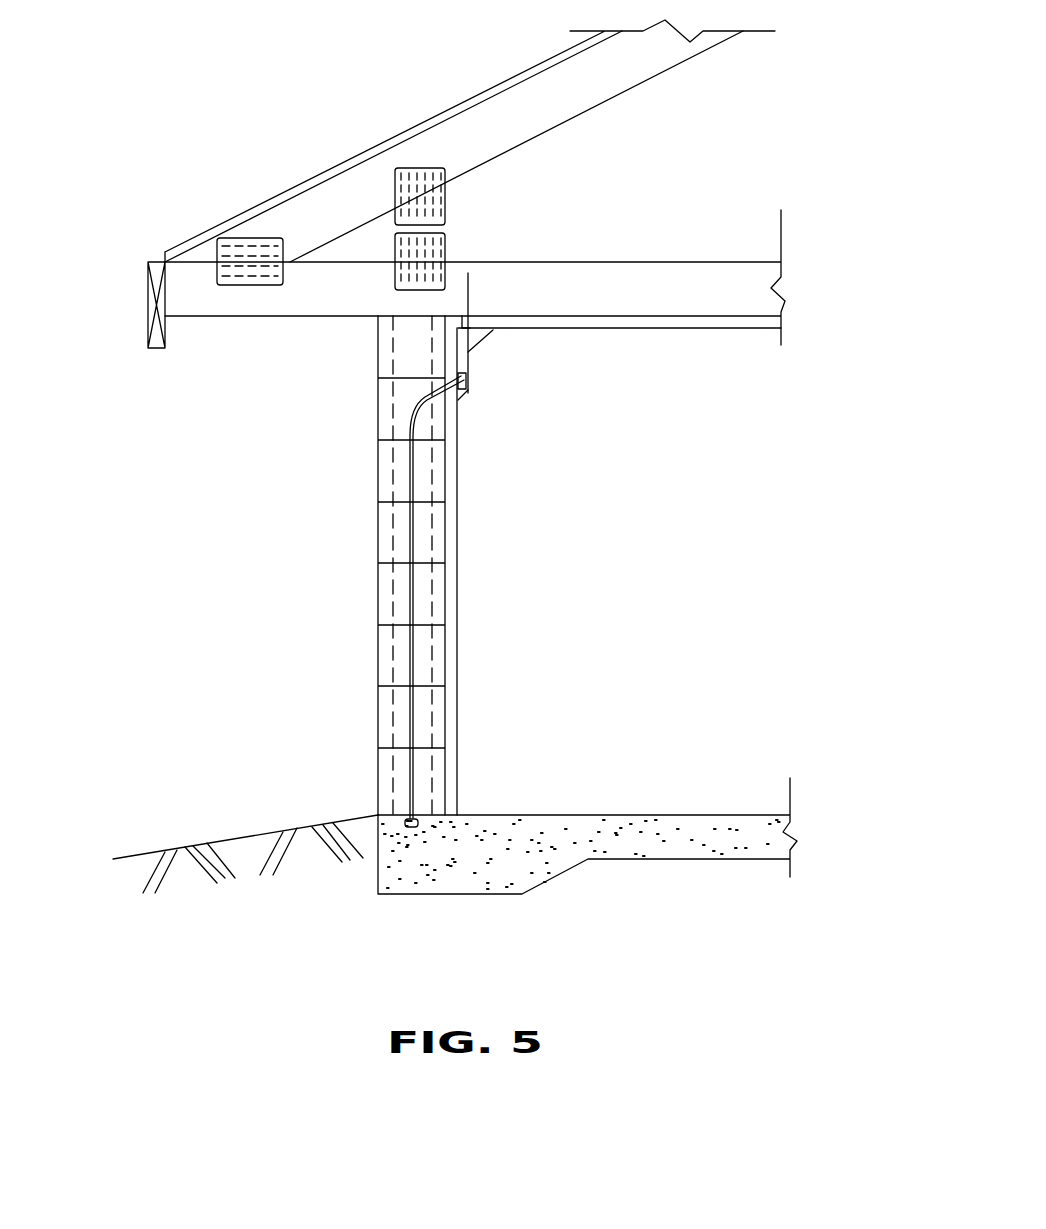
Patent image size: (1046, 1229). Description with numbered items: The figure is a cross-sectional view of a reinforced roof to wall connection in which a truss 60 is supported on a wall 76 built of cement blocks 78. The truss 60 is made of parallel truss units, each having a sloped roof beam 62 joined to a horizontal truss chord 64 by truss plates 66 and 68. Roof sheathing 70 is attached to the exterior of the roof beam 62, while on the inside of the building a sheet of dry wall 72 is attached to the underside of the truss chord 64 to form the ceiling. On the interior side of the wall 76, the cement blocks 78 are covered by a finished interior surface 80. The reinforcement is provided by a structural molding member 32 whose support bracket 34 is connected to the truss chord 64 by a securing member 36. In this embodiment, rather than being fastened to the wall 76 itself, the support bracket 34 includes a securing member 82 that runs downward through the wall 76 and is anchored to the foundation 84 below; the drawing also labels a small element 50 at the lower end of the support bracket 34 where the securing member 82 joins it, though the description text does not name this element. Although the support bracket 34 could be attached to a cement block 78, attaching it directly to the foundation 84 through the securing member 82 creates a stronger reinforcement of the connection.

The structural molding member 32 is at (475, 408).
The support bracket 34 is at (470, 352).
The securing member 36 is at (468, 292).
The sensor 50 is at (470, 383).
The truss 60 is at (368, 172).
The roof beam 62 is at (550, 112).
The truss chord 64 is at (693, 278).
The truss plate 66 is at (445, 228).
The truss plate 68 is at (272, 258).
The roof sheathing 70 is at (484, 91).
The dry wall 72 is at (708, 323).
The wall 76 is at (390, 540).
The cement blocks 78 is at (390, 410).
The finished interior surface 80 is at (450, 648).
The securing member 82 is at (413, 537).
The foundation 84 is at (650, 815).